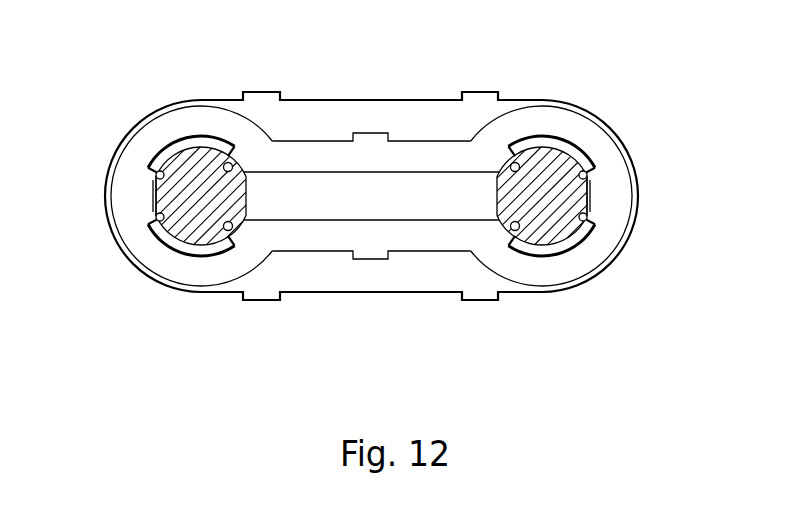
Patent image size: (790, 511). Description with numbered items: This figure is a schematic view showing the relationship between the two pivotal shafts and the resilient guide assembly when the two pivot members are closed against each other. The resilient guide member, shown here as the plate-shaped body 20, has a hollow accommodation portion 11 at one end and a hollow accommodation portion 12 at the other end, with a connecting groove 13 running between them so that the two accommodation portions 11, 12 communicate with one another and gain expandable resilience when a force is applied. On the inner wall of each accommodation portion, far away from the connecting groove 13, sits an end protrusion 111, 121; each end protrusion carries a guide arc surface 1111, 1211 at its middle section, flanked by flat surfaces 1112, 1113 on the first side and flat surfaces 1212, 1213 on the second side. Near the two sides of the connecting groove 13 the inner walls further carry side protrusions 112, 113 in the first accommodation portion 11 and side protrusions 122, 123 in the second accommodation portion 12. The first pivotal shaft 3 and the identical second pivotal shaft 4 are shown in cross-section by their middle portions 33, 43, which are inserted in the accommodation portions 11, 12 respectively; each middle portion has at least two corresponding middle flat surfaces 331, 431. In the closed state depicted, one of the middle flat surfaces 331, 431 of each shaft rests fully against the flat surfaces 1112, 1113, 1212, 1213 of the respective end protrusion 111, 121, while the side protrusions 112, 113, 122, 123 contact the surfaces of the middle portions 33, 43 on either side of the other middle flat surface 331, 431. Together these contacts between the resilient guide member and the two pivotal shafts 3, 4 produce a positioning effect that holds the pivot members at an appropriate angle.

The housing body 20 is at (340, 110).
The connecting groove 13 is at (450, 192).
The accommodation portion 11 is at (172, 105).
The end protrusion 111 is at (102, 203).
The guide arc surface 1111 is at (154, 207).
The flat surface 1112 is at (157, 176).
The flat surface 1113 is at (157, 227).
The side protrusion 112 is at (221, 163).
The side protrusion 113 is at (224, 232).
The first pivotal shaft 3 is at (148, 203).
The middle portion 33 is at (137, 224).
The middle flat surface 331 is at (154, 187).
The accommodation portion 12 is at (540, 141).
The end protrusion 121 is at (634, 195).
The guide arc surface 1211 is at (590, 190).
The flat surface 1212 is at (590, 168).
The flat surface 1213 is at (588, 226).
The side protrusion 122 is at (521, 163).
The side protrusion 123 is at (519, 232).
The second pivotal shaft 4 is at (599, 192).
The middle portion 43 is at (598, 211).
The middle flat surface 431 is at (590, 205).